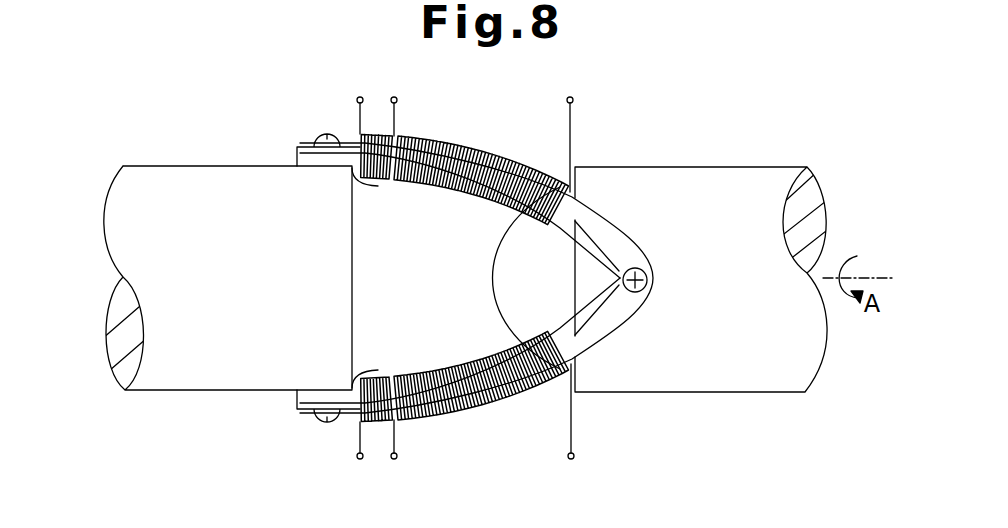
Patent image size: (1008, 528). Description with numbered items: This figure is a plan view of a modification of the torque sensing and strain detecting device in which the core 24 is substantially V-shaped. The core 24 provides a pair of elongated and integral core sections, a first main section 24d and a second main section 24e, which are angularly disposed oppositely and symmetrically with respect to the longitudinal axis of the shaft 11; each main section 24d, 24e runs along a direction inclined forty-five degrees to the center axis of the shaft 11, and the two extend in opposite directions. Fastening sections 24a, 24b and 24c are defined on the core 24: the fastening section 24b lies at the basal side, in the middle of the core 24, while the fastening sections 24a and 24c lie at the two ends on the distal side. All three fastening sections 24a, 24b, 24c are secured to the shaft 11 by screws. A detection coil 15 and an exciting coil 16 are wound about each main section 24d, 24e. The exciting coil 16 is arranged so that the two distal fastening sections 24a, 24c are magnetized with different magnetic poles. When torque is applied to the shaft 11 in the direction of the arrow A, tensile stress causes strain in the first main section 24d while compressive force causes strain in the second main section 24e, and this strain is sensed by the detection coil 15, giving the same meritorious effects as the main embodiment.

The shaft 11 is at (817, 354).
The detection coil 15 is at (372, 185).
The exciting coil 16 is at (437, 192).
The core 24 is at (594, 207).
The fastening section 24a is at (313, 414).
The fastening section 24b is at (652, 294).
The fastening section 24c is at (313, 143).
The first main section 24d is at (598, 355).
The second main section 24e is at (562, 236).